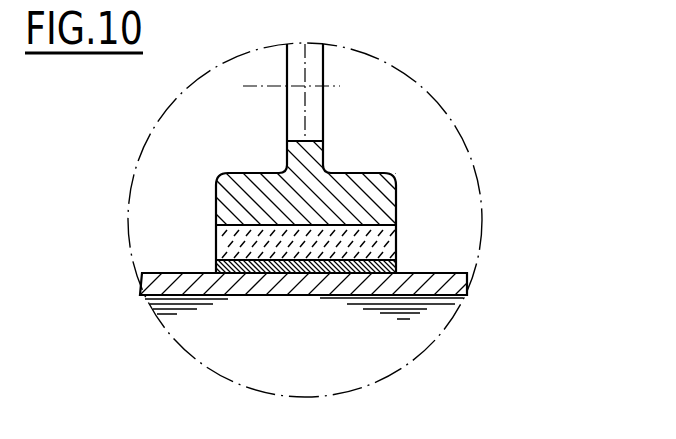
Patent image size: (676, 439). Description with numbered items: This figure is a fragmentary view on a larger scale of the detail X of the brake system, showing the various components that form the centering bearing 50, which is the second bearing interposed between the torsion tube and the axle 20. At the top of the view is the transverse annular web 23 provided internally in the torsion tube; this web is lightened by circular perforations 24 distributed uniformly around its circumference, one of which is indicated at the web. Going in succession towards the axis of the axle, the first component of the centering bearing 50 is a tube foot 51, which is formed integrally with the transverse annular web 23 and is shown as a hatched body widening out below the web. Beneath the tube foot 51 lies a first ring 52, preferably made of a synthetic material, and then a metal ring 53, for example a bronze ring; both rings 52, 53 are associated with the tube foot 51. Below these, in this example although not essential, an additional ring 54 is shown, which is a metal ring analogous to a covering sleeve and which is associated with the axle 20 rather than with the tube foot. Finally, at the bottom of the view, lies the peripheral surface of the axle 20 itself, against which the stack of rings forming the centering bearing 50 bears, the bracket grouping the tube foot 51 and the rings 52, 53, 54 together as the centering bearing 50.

The axle 20 is at (180, 282).
The transverse annular web 23 is at (292, 165).
The circular perforations 24 is at (312, 113).
The centering bearing 50 is at (173, 173).
The tube foot 51 is at (387, 193).
The first ring 52 is at (384, 238).
The metal ring 53 is at (400, 268).
The additional ring 54 is at (444, 290).
The detail X is at (480, 170).